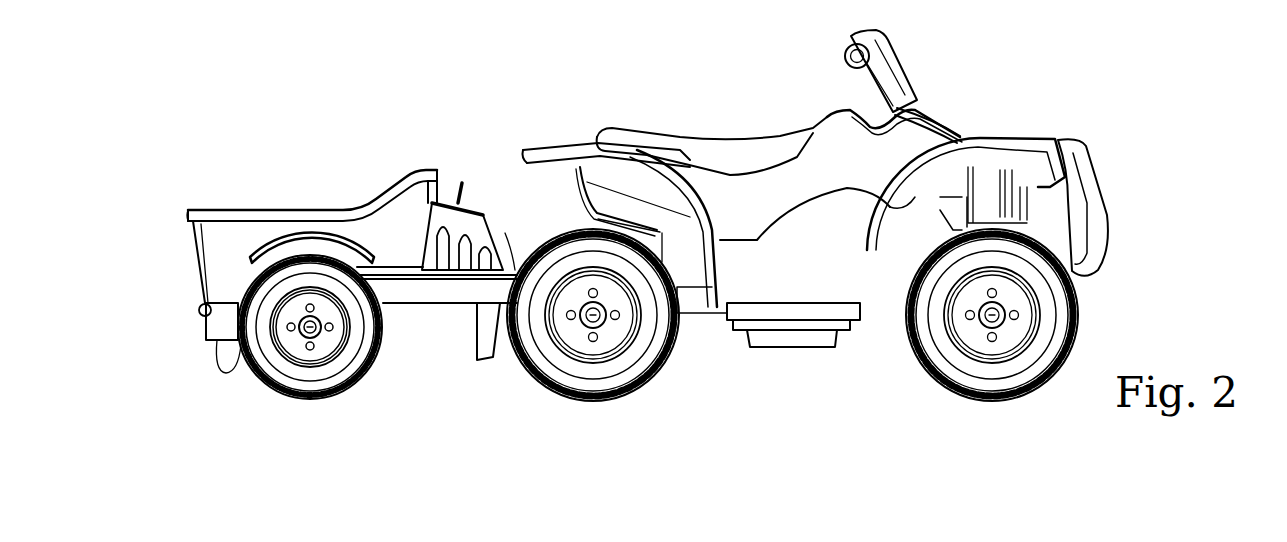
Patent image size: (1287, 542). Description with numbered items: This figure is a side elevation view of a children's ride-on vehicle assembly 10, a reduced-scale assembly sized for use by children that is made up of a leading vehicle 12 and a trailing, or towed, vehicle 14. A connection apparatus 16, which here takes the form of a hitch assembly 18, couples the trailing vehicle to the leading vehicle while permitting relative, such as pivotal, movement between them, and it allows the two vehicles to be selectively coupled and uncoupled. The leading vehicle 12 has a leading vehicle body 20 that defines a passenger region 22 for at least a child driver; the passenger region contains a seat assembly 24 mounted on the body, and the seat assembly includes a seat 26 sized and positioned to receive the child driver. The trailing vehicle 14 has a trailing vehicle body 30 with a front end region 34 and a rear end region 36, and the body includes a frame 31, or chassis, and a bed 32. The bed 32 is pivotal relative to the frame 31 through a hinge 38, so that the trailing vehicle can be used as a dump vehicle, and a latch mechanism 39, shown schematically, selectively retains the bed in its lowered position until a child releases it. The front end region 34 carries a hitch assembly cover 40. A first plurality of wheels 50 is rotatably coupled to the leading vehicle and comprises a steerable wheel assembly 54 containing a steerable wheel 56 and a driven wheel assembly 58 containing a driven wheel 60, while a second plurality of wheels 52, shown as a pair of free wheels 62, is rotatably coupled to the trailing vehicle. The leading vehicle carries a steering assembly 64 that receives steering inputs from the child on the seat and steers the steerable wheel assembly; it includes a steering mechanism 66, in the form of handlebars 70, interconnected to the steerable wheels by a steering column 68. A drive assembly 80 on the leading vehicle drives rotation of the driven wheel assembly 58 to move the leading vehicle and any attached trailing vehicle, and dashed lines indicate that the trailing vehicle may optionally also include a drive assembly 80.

The children's ride-on vehicle assembly 10 is at (432, 100).
The leading vehicle 12 is at (800, 213).
The trailing vehicle 14 is at (326, 268).
The connection apparatus 16 is at (468, 192).
The hitch assembly 18 is at (599, 307).
The leading vehicle body 20 is at (1012, 136).
The passenger region 22 is at (650, 116).
The seat assembly 24 is at (707, 132).
The seat 26 is at (757, 167).
The trailing vehicle body 30 is at (180, 212).
The frame 31 is at (446, 305).
The bed 32 is at (252, 206).
The front end region 34 is at (507, 207).
The rear end region 36 is at (176, 262).
The hinge 38 is at (199, 310).
The latch mechanism 39 is at (450, 192).
The hitch assembly cover 40 is at (515, 270).
The first plurality of wheels 50 is at (506, 360).
The second plurality of wheels 52 is at (270, 392).
The steerable wheel assembly 54 is at (914, 363).
The steerable wheel 56 is at (1050, 370).
The driven wheel assembly 58 is at (654, 377).
The driven wheel 60 is at (540, 372).
The free wheels 62 is at (350, 386).
The steering assembly 64 is at (916, 58).
The steering mechanism 66 is at (854, 42).
The steering column 68 is at (906, 110).
The handlebars 70 is at (849, 66).
The drive assembly 80 is at (386, 313).